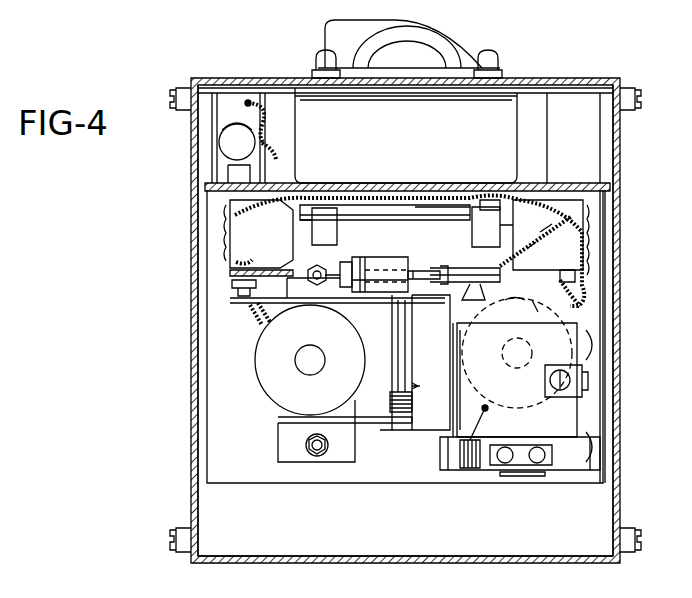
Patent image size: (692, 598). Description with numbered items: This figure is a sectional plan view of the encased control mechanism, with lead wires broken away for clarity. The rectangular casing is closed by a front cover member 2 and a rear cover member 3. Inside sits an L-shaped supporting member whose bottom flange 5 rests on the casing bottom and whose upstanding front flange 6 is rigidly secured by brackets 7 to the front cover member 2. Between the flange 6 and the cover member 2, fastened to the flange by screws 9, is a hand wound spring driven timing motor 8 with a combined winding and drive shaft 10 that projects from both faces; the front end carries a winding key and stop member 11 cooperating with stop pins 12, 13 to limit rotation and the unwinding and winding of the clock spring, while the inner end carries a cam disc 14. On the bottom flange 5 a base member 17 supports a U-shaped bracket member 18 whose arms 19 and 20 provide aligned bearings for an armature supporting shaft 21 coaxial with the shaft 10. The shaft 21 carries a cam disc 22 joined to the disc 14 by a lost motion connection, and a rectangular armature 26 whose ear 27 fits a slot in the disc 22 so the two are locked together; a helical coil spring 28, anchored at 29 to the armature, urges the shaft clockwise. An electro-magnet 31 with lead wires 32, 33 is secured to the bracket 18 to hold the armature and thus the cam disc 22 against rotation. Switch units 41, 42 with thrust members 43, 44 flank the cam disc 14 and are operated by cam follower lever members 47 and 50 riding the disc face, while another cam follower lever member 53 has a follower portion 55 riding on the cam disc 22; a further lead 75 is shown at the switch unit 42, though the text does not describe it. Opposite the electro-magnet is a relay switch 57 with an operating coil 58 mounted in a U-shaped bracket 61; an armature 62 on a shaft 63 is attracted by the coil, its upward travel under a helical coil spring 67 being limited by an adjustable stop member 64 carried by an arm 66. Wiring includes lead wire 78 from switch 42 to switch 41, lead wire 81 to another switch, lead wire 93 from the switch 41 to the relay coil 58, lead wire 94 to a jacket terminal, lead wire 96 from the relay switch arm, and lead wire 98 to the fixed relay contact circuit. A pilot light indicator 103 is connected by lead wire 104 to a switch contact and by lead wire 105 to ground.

The front cover member 2 is at (540, 80).
The rear cover member 3 is at (334, 563).
The bottom flange 5 is at (243, 478).
The front flange 6 is at (535, 183).
The brackets 7 is at (220, 90).
The timing motor 8 is at (406, 135).
The screws 9 is at (345, 195).
The winding and drive shaft 10 is at (404, 84).
The winding key and stop member 11 is at (432, 30).
The stop pin 12 is at (496, 62).
The stop pin 13 is at (316, 58).
The cam disc 14 is at (434, 207).
The base member 17 is at (280, 446).
The U-shaped bracket member 18 is at (280, 412).
The arm 19 is at (368, 425).
The arm 20 is at (335, 320).
The armature supporting shaft 21 is at (392, 316).
The cam disc 22 is at (462, 280).
The armature 26 is at (428, 426).
The ear 27 is at (430, 285).
The helical coil spring 28 is at (392, 398).
The spring anchor 29 is at (420, 386).
The electro-magnet 31 is at (256, 348).
The lead wire 32 is at (262, 312).
The lead wire 33 is at (256, 318).
The switch unit 41 is at (551, 241).
The switch unit 42 is at (258, 238).
The thrust member 43 is at (502, 222).
The thrust member 44 is at (312, 225).
The cam follower lever member 47 is at (324, 205).
The cam follower lever member 50 is at (492, 200).
The cam follower lever member 53 is at (396, 262).
The follower portion 55 is at (358, 262).
The relay switch 57 is at (516, 293).
The relay coil 58 is at (536, 312).
The U-shaped bracket 61 is at (578, 440).
The armature 62 is at (515, 380).
The armature shaft 63 is at (560, 470).
The adjustable stop member 64 is at (550, 388).
The arm 66 is at (548, 372).
The helical coil spring 67 is at (470, 470).
The lead 75 is at (252, 260).
The lead wire 78 is at (395, 212).
The lead wire 81 is at (540, 232).
The lead wire 93 is at (590, 298).
The lead wire 94 is at (537, 311).
The lead wire 96 is at (500, 290).
The lead wire 98 is at (536, 242).
The pilot light indicator 103 is at (230, 141).
The lead wire 104 is at (268, 145).
The lead wire 105 is at (262, 113).